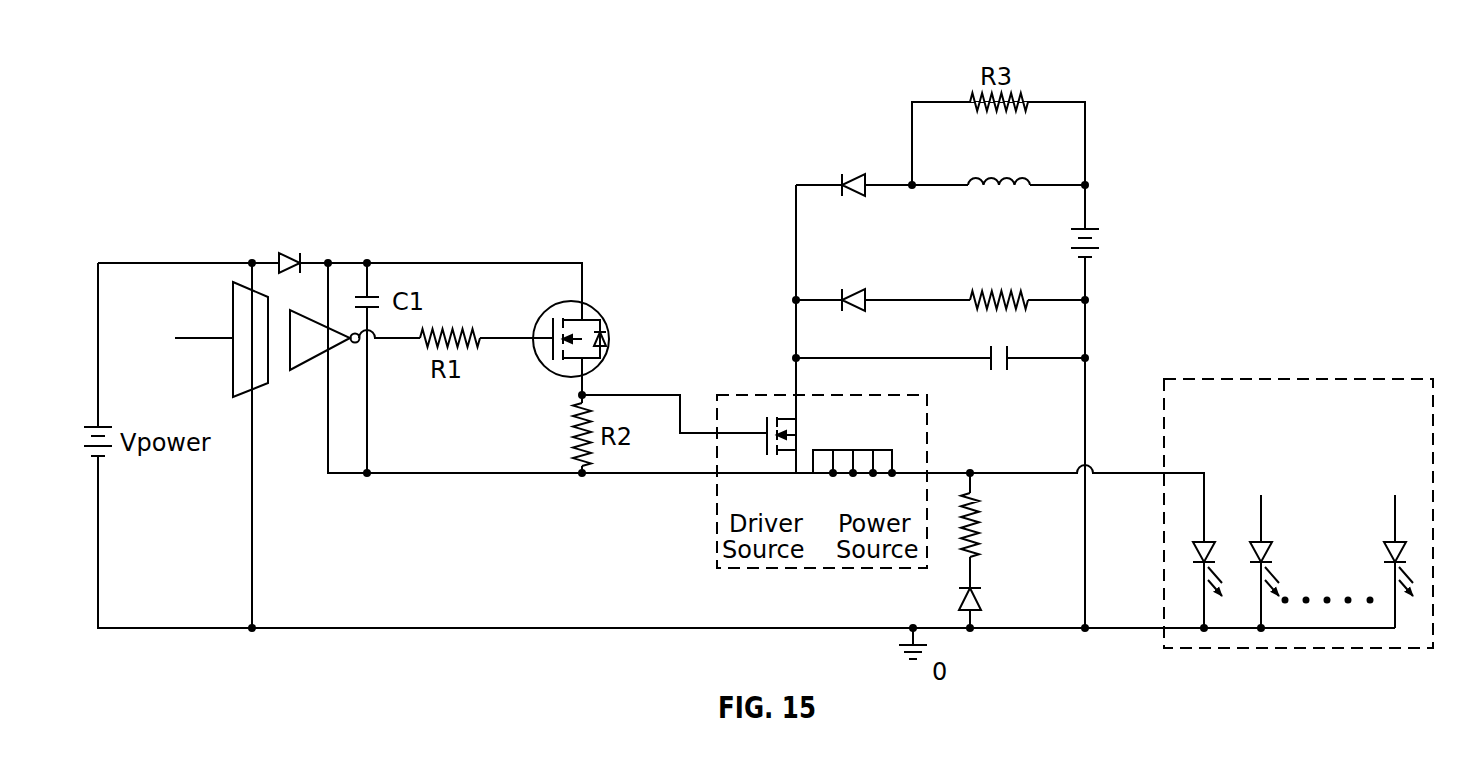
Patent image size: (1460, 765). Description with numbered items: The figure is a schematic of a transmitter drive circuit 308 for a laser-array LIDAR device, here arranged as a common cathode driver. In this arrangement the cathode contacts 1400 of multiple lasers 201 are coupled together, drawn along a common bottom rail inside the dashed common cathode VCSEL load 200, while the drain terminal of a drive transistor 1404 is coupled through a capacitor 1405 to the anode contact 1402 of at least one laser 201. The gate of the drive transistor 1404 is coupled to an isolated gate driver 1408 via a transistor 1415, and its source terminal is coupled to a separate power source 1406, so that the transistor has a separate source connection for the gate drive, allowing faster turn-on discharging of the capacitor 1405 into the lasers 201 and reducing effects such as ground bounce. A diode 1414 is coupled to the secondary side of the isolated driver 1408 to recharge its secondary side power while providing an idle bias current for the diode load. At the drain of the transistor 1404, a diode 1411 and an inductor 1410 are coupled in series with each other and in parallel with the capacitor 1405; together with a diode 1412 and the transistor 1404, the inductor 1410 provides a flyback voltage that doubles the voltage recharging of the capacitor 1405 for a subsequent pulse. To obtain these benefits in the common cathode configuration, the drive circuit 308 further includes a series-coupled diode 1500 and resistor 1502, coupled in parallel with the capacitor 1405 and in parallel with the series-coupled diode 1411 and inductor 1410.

The drive circuit 308 is at (1183, 62).
The isolated gate driver 1408 is at (232, 318).
The diode 1414 is at (302, 252).
The transistor 1415 is at (608, 302).
The drive transistor 1404 is at (752, 450).
The power source 1406 is at (830, 483).
The diode 1411 is at (835, 178).
The inductor 1410 is at (1035, 170).
The resistor 1502 is at (968, 290).
The diode 1500 is at (867, 308).
The capacitor 1405 is at (999, 372).
The diode 1412 is at (983, 580).
The common cathode VCSEL load 200 is at (1367, 650).
The anode contact 1402 is at (1222, 510).
The laser 201 is at (1385, 548).
The cathode contact 1400 is at (1198, 620).